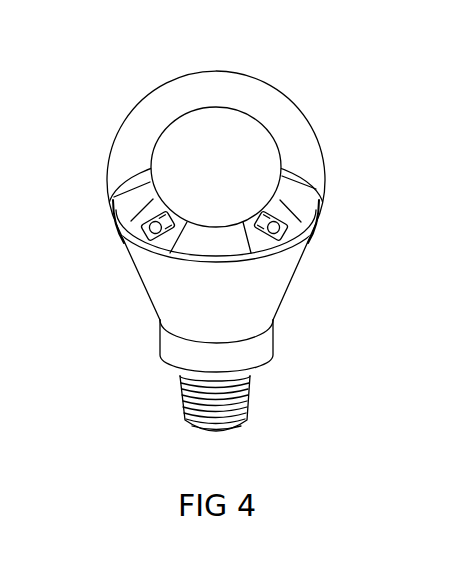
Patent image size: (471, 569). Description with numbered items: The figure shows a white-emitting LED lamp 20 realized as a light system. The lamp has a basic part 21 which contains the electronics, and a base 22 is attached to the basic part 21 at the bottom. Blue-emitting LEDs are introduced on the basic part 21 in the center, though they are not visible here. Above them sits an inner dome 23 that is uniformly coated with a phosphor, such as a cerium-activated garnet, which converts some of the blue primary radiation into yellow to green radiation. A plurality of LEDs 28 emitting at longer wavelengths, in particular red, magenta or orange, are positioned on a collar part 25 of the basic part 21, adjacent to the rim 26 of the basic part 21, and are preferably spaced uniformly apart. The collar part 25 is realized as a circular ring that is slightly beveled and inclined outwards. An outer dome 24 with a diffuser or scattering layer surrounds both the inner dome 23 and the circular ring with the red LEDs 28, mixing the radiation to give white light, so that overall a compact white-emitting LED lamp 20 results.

The LED lamp 20 is at (356, 121).
The basic part 21 is at (289, 285).
The base 22 is at (262, 398).
The inner dome 23 is at (258, 123).
The outer dome 24 is at (217, 71).
The collar part 25 is at (203, 251).
The rim 26 is at (120, 233).
The LEDs 28 is at (146, 240).